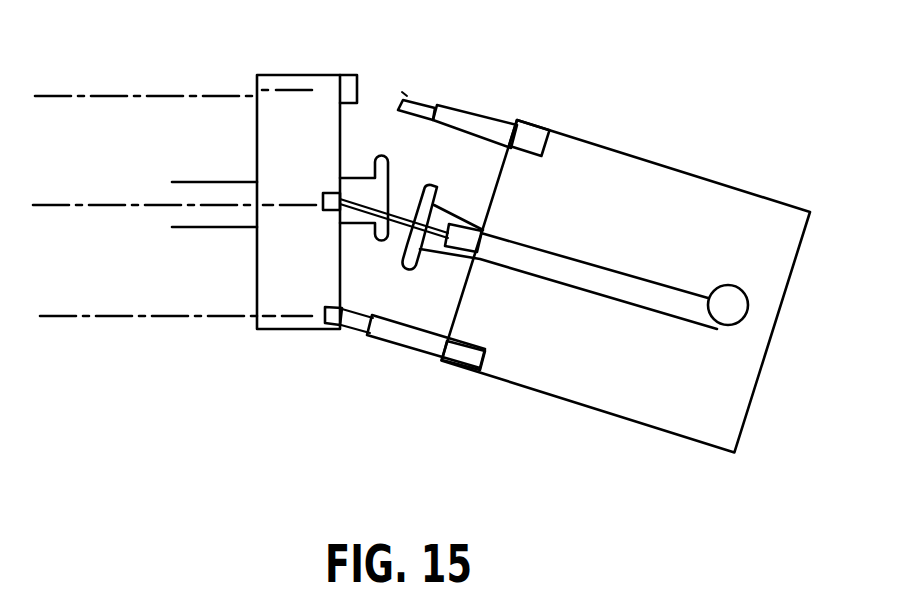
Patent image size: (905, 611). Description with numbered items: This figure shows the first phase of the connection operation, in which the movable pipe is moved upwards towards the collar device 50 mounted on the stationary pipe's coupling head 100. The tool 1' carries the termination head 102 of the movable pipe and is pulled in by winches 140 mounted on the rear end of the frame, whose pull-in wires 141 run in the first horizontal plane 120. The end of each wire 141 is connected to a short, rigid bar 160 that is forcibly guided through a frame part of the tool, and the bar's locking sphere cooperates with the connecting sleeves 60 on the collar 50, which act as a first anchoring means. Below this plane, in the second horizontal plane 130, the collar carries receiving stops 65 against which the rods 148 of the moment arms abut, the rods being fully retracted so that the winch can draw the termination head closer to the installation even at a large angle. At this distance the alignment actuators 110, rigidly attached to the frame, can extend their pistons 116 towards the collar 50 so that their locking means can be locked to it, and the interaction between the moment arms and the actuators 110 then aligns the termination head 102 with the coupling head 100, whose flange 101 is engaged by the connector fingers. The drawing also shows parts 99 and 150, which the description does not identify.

The tool 1' is at (625, 264).
The collar device 50 is at (296, 74).
The tab 99 is at (347, 73).
The flange 101 is at (355, 177).
The connecting sleeve 60 is at (338, 214).
The coupling head 100 is at (215, 182).
The short rigid bar 160 is at (101, 97).
The first horizontal plane 120 is at (112, 207).
The second horizontal plane 130 is at (137, 318).
The stop 65 is at (338, 293).
The moment arm rod 148 is at (358, 332).
The end block 150 is at (470, 356).
The piston rod 116 is at (422, 103).
The alignment actuator 110 is at (489, 120).
The termination head 102 is at (437, 186).
The pull-in wire 141 is at (597, 278).
The winch 140 is at (748, 314).